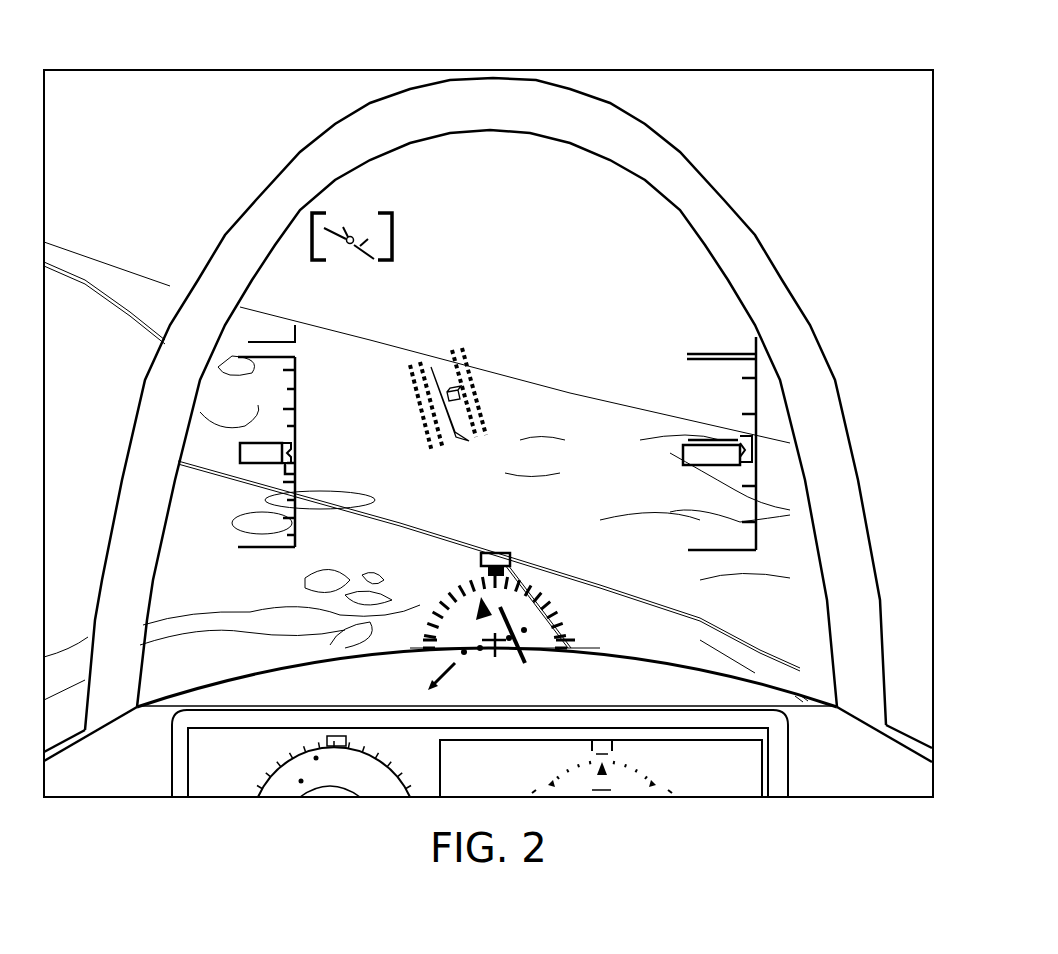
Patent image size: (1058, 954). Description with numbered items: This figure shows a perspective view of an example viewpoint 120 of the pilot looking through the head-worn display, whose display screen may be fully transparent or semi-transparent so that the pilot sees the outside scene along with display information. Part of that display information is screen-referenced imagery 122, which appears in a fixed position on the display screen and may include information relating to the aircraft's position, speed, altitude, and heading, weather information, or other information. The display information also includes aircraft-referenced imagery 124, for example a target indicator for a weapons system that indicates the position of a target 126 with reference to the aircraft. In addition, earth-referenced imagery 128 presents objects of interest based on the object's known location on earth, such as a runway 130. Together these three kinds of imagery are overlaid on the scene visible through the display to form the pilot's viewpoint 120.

The viewpoint 120 is at (773, 46).
The screen-referenced imagery 122 is at (335, 422).
The aircraft-referenced imagery 124 is at (391, 229).
The target 126 is at (353, 236).
The earth-referenced imagery 128 is at (445, 452).
The runway 130 is at (460, 430).